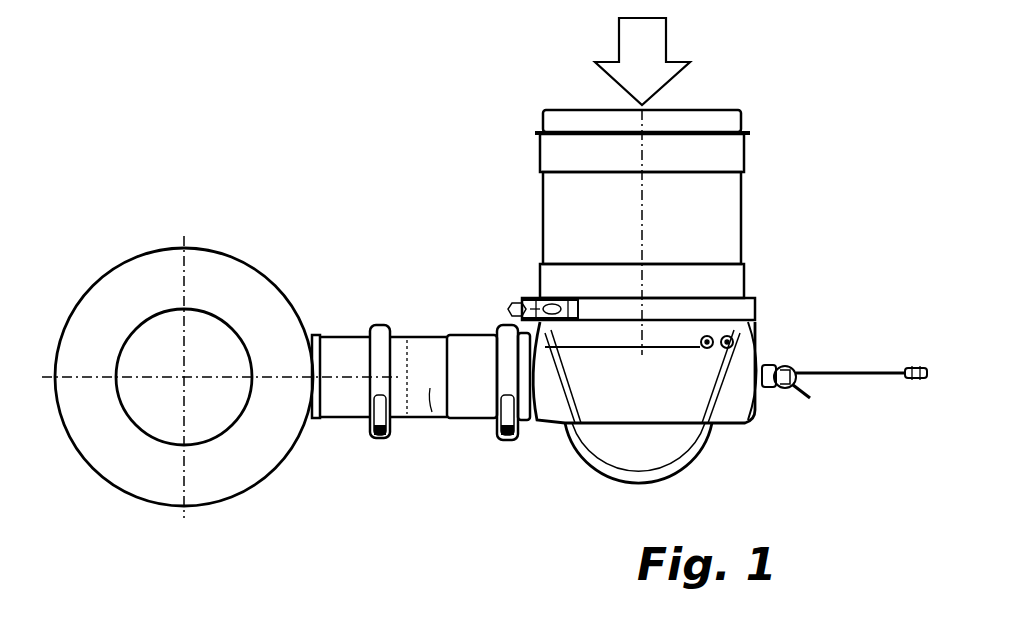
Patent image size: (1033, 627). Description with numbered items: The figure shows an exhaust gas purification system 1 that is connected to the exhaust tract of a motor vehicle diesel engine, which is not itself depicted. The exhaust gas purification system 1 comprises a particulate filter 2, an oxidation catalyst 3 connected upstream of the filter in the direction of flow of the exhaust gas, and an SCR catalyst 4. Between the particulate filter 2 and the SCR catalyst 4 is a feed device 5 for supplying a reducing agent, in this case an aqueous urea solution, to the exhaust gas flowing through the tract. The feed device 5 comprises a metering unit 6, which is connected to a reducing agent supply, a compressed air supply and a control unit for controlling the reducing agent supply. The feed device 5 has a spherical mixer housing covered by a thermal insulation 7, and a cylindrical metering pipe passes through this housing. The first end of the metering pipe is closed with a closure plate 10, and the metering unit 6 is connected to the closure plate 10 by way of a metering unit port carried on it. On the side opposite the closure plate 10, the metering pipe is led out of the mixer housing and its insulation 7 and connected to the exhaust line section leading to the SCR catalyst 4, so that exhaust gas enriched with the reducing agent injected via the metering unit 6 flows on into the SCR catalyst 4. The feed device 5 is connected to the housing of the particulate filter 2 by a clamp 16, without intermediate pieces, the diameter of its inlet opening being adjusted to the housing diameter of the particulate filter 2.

The exhaust gas purification system 1 is at (403, 205).
The particulate filter 2 is at (642, 235).
The oxidation catalyst 3 is at (642, 141).
The SCR catalyst 4 is at (258, 268).
The feed device 5 is at (598, 451).
The metering unit 6 is at (790, 392).
The thermal insulation 7 is at (622, 385).
The closure plate 10 is at (757, 348).
The clamp 16 is at (530, 298).